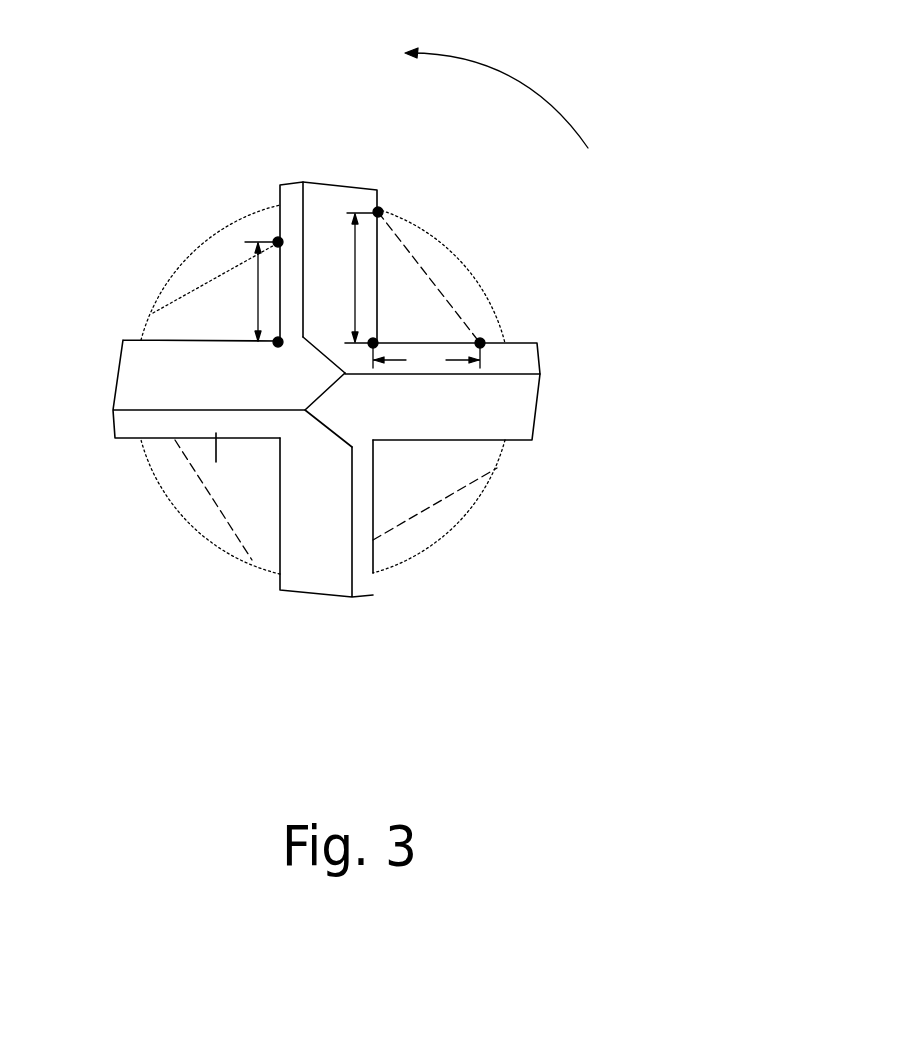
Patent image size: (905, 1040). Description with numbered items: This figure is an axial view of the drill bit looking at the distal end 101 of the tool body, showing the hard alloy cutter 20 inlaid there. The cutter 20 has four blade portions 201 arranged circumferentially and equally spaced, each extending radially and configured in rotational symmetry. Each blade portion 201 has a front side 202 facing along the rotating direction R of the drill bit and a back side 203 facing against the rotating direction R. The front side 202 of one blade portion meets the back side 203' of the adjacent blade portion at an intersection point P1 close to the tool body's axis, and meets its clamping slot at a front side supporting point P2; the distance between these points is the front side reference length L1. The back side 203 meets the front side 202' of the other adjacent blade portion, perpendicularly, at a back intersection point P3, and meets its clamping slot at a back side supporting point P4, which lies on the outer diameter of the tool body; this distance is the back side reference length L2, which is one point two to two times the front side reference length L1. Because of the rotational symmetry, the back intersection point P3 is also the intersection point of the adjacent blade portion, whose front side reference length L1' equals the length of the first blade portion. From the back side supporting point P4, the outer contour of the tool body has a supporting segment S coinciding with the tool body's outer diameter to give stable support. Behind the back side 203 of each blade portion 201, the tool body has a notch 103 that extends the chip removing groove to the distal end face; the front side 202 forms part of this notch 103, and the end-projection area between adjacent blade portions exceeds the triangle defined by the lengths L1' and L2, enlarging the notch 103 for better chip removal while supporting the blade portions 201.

The hard alloy cutter 20 is at (520, 400).
The blade portion 201 is at (467, 415).
The front side 202 is at (265, 219).
The back side 203 is at (360, 253).
The front side of adjacent blade portion 202' is at (482, 293).
The back side of adjacent blade portion 203' is at (173, 272).
The distal end of the tool body 101 is at (395, 483).
The notch 103 is at (197, 493).
The supporting segment S is at (385, 212).
The rotating direction R is at (496, 96).
The intersection point P1 is at (263, 354).
The front side supporting point P2 is at (264, 232).
The back intersection point P3 is at (426, 332).
The back side supporting point P4 is at (385, 197).
The front side reference length L1 is at (261, 292).
The back side reference length L2 is at (356, 278).
The front side reference length of adjacent blade portion L1' is at (426, 358).